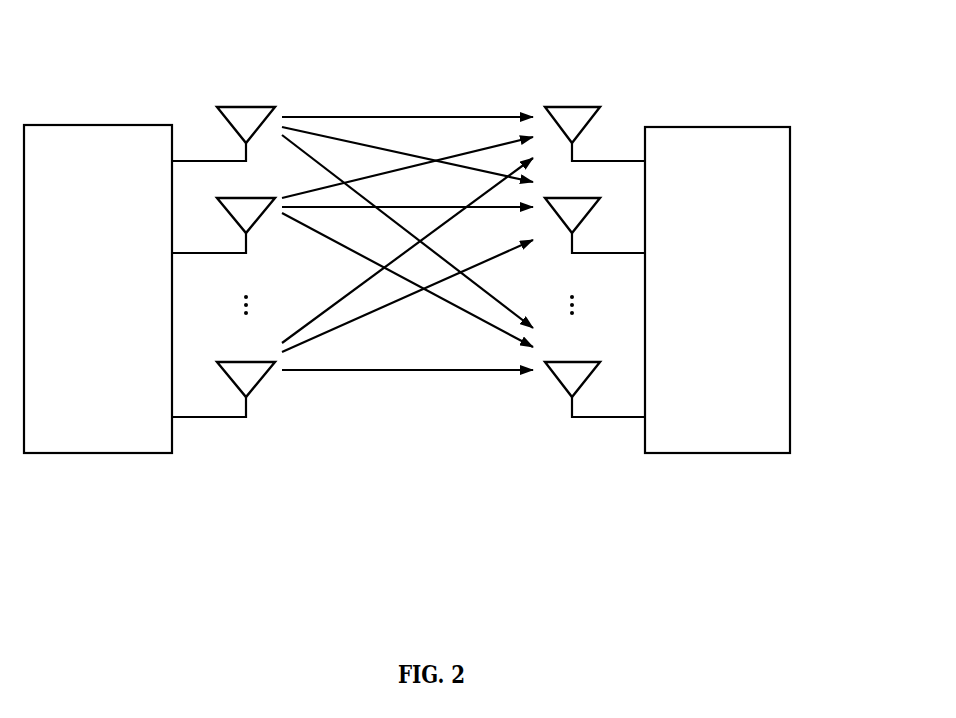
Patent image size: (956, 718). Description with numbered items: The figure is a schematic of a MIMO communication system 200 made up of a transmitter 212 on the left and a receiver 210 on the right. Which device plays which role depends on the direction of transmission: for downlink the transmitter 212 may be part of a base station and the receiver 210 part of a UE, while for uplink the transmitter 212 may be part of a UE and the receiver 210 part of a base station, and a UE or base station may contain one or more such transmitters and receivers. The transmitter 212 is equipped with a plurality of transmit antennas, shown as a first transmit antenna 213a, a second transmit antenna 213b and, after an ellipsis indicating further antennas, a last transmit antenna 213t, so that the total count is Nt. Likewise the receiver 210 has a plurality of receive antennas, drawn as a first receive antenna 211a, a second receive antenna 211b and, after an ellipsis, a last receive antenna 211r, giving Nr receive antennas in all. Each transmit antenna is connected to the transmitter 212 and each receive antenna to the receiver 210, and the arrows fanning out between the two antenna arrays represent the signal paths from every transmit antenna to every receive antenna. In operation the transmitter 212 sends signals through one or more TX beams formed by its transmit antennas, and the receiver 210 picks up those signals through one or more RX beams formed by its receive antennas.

The MIMO communication system 200 is at (786, 54).
The receiver 210 is at (714, 127).
The transmitter 212 is at (93, 125).
The transmit antenna 213a is at (232, 120).
The transmit antenna 213b is at (232, 210).
The transmit antenna 213t is at (232, 374).
The receive antenna 211a is at (591, 120).
The receive antenna 211b is at (591, 210).
The receive antenna 211r is at (591, 374).